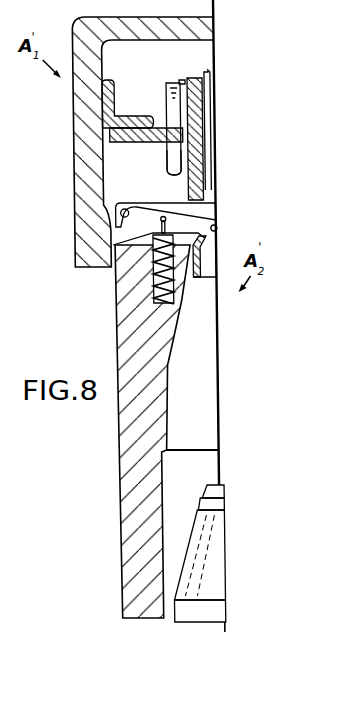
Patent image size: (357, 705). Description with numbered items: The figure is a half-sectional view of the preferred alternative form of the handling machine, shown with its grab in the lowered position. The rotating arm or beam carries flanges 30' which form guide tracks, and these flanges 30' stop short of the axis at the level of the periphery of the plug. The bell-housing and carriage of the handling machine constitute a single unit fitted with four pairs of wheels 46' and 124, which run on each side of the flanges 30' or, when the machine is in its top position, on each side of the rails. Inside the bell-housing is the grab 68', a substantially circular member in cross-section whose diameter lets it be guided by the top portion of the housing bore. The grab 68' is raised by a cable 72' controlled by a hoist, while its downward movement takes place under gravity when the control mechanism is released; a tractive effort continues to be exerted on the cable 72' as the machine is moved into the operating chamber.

The flanges 30' is at (142, 125).
The wheels 46' is at (157, 124).
The wheels 124 is at (168, 177).
The cable 72' is at (212, 344).
The grab 68' is at (217, 553).